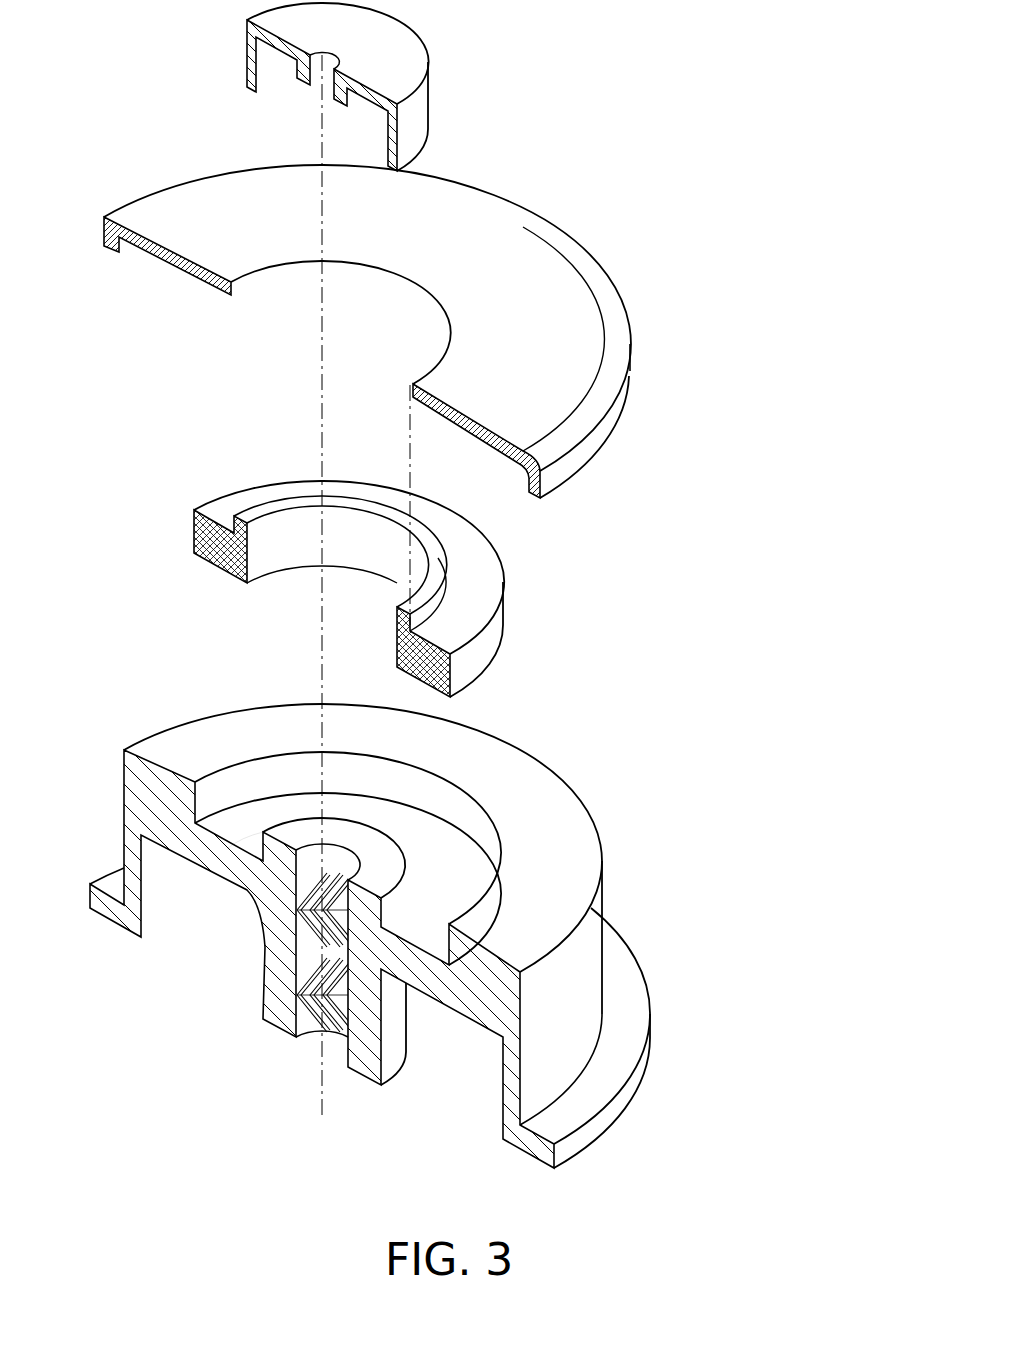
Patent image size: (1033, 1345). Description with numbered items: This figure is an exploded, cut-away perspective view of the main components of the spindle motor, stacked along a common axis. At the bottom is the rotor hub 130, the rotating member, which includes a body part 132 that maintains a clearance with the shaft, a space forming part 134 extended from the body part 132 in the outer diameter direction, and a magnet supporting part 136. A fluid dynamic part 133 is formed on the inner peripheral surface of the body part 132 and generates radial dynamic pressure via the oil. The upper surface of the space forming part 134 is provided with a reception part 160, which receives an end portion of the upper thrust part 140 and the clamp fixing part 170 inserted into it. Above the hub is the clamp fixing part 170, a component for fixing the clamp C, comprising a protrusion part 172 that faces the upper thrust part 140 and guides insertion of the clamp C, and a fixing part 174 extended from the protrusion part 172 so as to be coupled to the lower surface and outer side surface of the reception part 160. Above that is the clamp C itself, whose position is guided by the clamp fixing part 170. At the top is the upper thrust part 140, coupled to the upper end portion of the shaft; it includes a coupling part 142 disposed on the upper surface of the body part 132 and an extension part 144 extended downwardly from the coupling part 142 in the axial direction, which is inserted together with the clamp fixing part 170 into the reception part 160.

The rotor hub 130 is at (460, 908).
The body part 132 is at (413, 930).
The fluid dynamic part 133 is at (320, 953).
The space forming part 134 is at (478, 954).
The magnet supporting part 136 is at (523, 1046).
The upper thrust part 140 is at (445, 87).
The coupling part 142 is at (400, 89).
The extension part 144 is at (393, 130).
The reception part 160 is at (228, 848).
The clamp fixing part 170 is at (461, 592).
The protrusion part 172 is at (413, 618).
The fixing part 174 is at (447, 693).
The clamp C is at (597, 363).